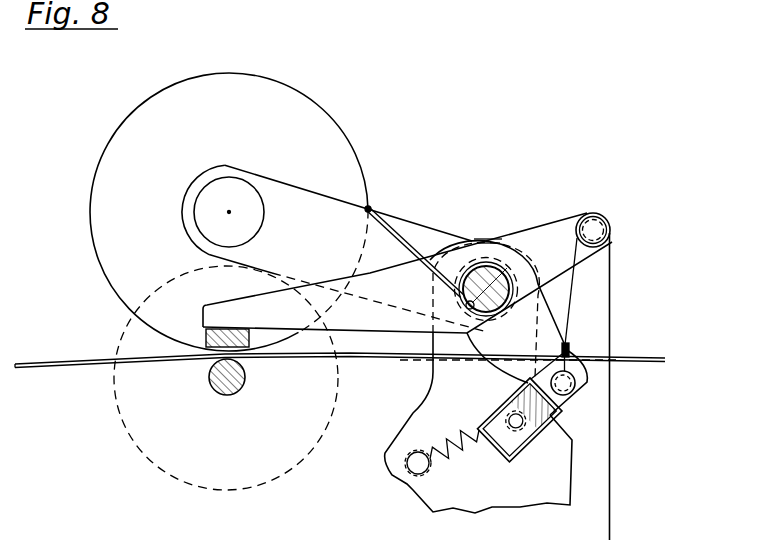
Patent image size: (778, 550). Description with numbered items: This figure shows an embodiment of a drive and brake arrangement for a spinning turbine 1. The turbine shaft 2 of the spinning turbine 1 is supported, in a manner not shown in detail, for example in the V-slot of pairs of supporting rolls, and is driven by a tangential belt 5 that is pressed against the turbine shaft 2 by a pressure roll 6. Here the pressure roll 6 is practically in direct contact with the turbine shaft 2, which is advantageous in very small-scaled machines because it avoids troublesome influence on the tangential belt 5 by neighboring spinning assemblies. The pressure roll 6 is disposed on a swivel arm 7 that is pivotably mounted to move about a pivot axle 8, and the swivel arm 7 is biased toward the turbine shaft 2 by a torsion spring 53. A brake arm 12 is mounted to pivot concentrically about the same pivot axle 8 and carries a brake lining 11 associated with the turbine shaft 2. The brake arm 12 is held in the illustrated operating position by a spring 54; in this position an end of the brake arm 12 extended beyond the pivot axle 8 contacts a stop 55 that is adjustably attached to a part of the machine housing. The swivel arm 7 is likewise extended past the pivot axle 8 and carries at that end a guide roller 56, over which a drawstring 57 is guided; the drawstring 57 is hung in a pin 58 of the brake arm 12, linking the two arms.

The spinning turbine 1 is at (118, 407).
The turbine shaft 2 is at (235, 385).
The tangential belt 5 is at (62, 362).
The pressure roll 6 is at (345, 137).
The swivel arm 7 is at (345, 220).
The pivot axle 8 is at (492, 278).
The brake lining 11 is at (250, 350).
The brake arm 12 is at (395, 312).
The torsion spring 53 is at (409, 246).
The spring 54 is at (448, 430).
The stop 55 is at (550, 418).
The guide roller 56 is at (606, 220).
The drawstring 57 is at (611, 329).
The pin 58 is at (575, 380).